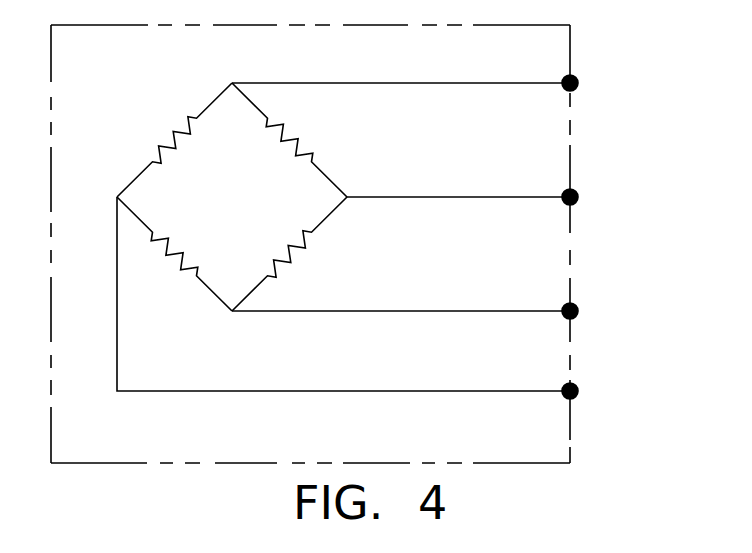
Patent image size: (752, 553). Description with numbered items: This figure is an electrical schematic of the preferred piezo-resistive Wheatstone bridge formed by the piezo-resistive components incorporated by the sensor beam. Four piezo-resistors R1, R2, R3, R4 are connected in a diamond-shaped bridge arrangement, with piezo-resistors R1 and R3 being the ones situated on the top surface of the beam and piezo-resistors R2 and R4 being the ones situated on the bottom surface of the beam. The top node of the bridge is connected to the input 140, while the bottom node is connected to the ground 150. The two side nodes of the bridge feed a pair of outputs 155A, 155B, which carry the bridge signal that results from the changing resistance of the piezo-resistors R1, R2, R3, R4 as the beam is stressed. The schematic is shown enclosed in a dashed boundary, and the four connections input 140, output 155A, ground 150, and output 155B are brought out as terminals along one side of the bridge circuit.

The input 140 is at (578, 82).
The ground 150 is at (578, 310).
The output 155A is at (578, 196).
The output 155B is at (578, 390).
The piezo-resistor R1 is at (289, 140).
The piezo-resistor R2 is at (174, 254).
The piezo-resistor R3 is at (289, 254).
The piezo-resistor R4 is at (174, 140).